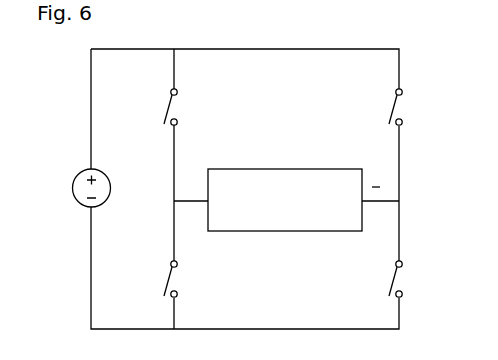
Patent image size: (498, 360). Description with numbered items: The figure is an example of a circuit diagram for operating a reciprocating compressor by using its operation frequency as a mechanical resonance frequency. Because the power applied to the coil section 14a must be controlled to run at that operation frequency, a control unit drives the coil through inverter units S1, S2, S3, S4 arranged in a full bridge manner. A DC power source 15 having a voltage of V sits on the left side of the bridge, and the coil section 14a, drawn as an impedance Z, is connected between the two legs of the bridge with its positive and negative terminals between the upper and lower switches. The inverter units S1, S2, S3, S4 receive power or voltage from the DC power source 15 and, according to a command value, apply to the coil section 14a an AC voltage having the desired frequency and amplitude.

The DC power source 15 is at (78, 175).
The coil section 14a is at (245, 168).
The inverter unit S1 is at (157, 107).
The inverter unit S2 is at (382, 279).
The inverter unit S3 is at (382, 107).
The inverter unit S4 is at (157, 279).